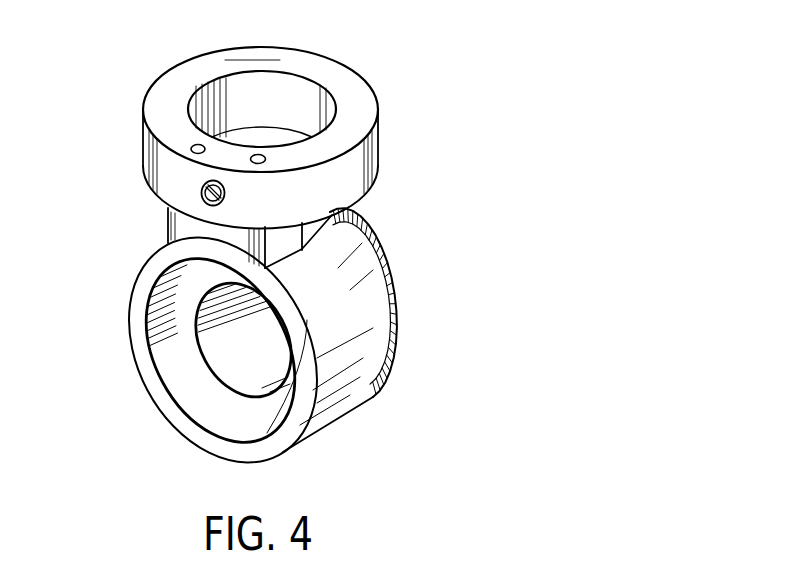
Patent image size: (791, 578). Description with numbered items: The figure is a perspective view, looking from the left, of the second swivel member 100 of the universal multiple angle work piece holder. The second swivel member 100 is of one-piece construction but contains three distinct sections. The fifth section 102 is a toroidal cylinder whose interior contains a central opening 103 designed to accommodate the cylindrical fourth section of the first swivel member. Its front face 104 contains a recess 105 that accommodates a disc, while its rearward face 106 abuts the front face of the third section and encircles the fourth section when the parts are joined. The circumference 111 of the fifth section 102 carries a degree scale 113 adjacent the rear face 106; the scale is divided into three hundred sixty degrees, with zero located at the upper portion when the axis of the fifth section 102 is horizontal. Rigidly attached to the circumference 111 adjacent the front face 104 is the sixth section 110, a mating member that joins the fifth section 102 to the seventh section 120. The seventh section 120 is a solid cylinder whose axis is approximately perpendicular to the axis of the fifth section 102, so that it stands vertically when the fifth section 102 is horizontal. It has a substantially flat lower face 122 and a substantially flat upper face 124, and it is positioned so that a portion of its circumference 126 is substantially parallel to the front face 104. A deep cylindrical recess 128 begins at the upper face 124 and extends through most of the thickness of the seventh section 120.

The second swivel member 100 is at (452, 259).
The fifth section 102 is at (345, 403).
The central opening 103 is at (217, 347).
The front face 104 is at (213, 445).
The recess 105 is at (167, 312).
The rearward face 106 is at (393, 310).
The sixth section 110 is at (190, 227).
The circumference 111 is at (358, 352).
The degree scale 113 is at (370, 253).
The seventh section 120 is at (158, 158).
The lower face 122 is at (364, 190).
The upper face 124 is at (355, 98).
The circumference 126 is at (378, 137).
The cylindrical recess 128 is at (292, 105).